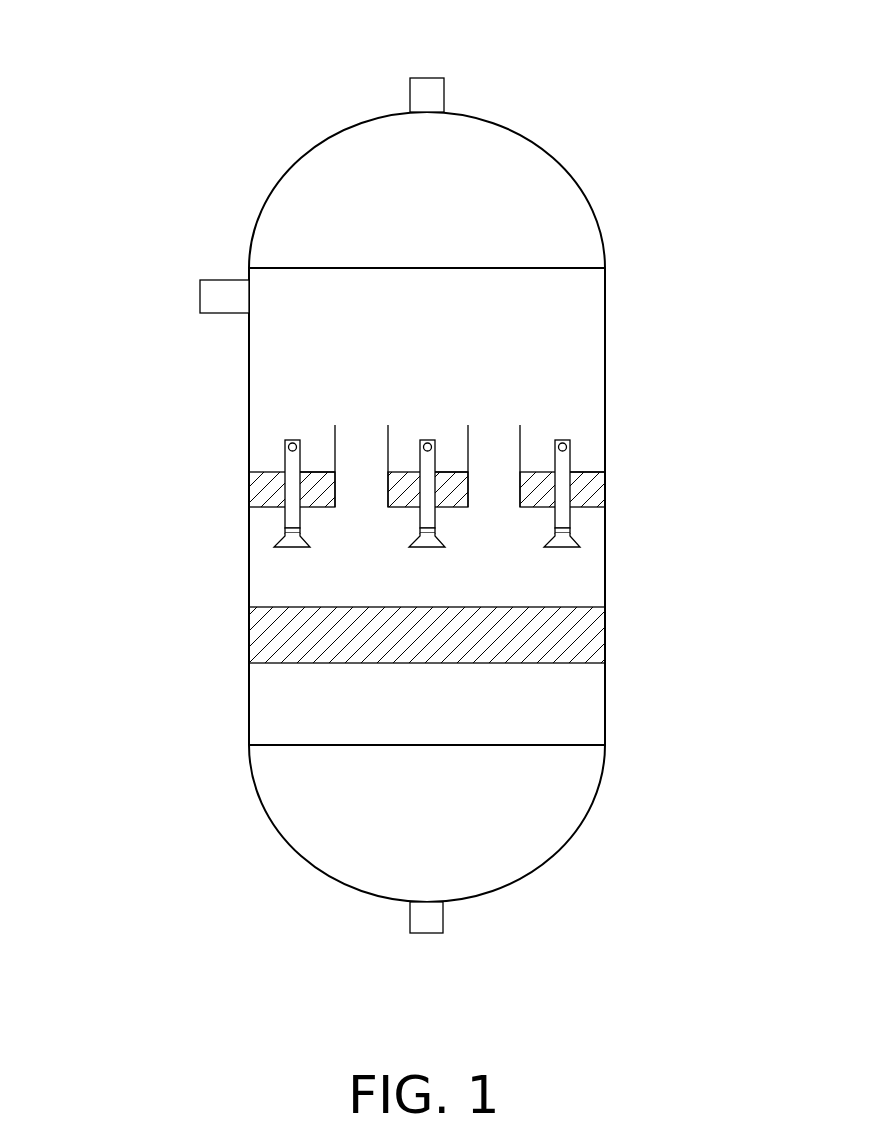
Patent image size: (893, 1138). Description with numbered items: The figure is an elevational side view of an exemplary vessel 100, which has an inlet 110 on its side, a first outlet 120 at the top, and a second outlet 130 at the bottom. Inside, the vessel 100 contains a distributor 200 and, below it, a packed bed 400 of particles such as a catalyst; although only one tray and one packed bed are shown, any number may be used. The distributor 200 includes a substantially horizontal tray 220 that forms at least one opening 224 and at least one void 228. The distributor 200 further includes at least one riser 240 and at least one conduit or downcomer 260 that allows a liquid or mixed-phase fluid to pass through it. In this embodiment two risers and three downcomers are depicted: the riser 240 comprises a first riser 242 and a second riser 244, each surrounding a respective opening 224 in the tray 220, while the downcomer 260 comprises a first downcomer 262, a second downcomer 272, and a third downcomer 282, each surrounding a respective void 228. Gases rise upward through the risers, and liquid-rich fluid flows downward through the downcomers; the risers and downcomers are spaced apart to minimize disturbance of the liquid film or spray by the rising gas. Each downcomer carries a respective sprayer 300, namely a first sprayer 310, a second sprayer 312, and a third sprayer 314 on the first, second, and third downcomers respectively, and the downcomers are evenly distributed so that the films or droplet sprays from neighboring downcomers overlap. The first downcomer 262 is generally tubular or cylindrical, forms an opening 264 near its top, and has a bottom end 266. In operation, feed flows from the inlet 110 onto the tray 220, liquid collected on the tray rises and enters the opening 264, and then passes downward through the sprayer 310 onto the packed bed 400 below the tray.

The vessel 100 is at (726, 137).
The inlet 110 is at (211, 280).
The first outlet 120 is at (444, 91).
The second outlet 130 is at (443, 918).
The distributor 200 is at (441, 469).
The tray 220 is at (605, 478).
The opening 224 is at (452, 427).
The void 228 is at (278, 464).
The riser 240 is at (315, 427).
The first riser 242 is at (388, 438).
The second riser 244 is at (520, 438).
The downcomer 260 is at (224, 493).
The first downcomer 262 is at (300, 518).
The opening 264 is at (292, 438).
The bottom end 266 is at (286, 571).
The second downcomer 272 is at (435, 520).
The third downcomer 282 is at (565, 520).
The sprayer 300 is at (259, 493).
The first sprayer 310 is at (303, 545).
The second sprayer 312 is at (430, 545).
The third sprayer 314 is at (565, 548).
The packed bed 400 is at (605, 636).